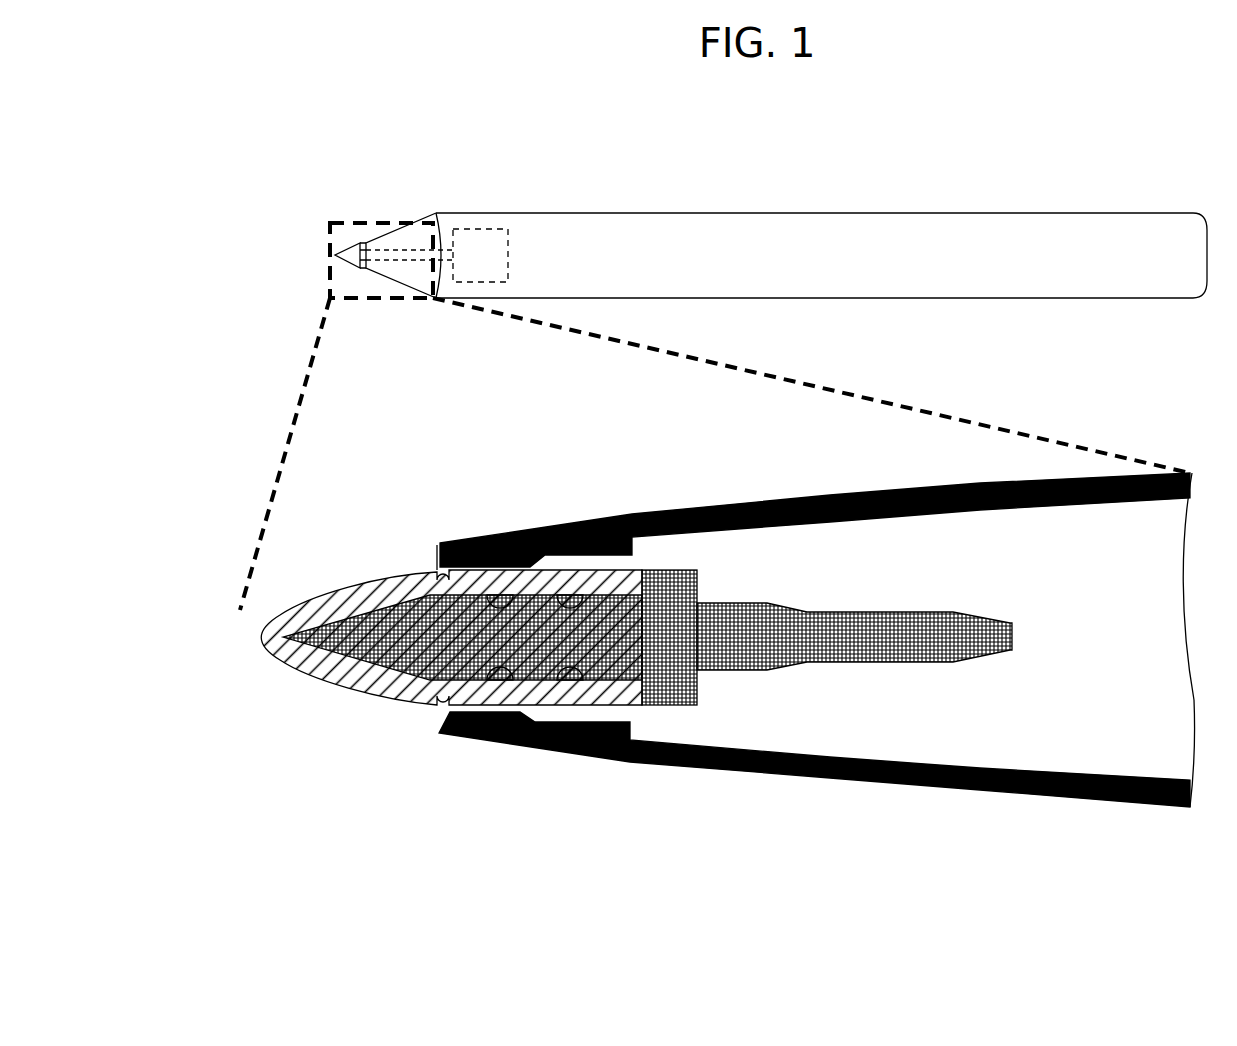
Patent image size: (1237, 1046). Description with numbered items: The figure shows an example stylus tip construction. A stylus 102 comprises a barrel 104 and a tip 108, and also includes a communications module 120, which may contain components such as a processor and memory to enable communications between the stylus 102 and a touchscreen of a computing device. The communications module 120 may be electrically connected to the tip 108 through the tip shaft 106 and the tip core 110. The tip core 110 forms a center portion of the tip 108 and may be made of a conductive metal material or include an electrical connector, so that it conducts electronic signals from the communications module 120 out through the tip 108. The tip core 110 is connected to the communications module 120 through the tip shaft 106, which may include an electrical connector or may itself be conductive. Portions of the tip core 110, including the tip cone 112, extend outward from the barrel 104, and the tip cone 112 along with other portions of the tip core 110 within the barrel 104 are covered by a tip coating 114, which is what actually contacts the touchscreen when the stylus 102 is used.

The stylus 102 is at (693, 480).
The barrel 104 is at (753, 838).
The tip shaft 106 is at (827, 556).
The tip 108 is at (350, 243).
The tip core 110 is at (462, 527).
The tip cone 112 is at (451, 583).
The tip coating 114 is at (325, 612).
The communications module 120 is at (487, 228).